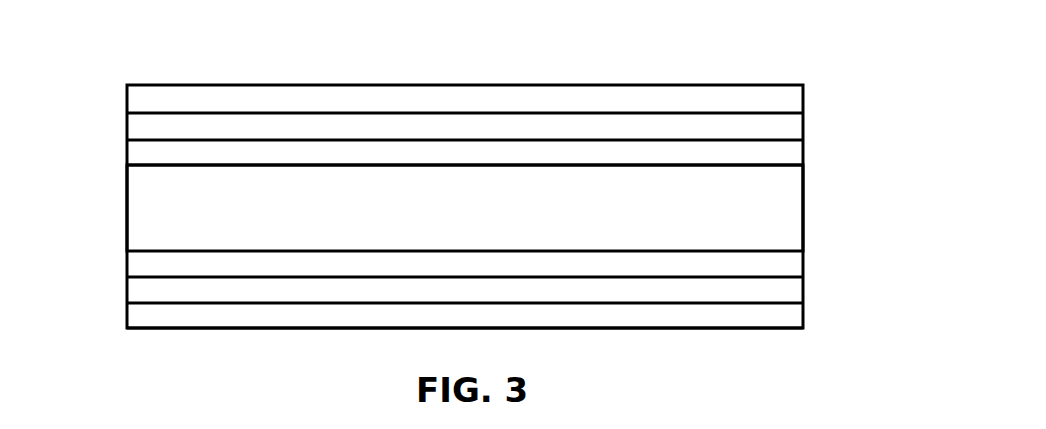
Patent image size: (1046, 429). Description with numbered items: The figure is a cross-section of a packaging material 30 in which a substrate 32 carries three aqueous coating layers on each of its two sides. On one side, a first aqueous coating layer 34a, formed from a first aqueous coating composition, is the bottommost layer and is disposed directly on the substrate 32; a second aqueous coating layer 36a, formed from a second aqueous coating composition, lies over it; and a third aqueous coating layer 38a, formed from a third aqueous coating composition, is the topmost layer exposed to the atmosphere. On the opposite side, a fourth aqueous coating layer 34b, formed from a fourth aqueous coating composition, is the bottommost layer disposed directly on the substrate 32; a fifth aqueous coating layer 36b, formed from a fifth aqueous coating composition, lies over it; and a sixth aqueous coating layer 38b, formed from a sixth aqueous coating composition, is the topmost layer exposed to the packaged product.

The packaging material 30 is at (470, 164).
The substrate 32 is at (125, 205).
The first aqueous coating layer 34a is at (125, 153).
The fourth aqueous coating layer 34b is at (125, 262).
The second aqueous coating layer 36a is at (125, 132).
The fifth aqueous coating layer 36b is at (125, 290).
The third aqueous coating layer 38a is at (153, 76).
The sixth aqueous coating layer 38b is at (125, 315).